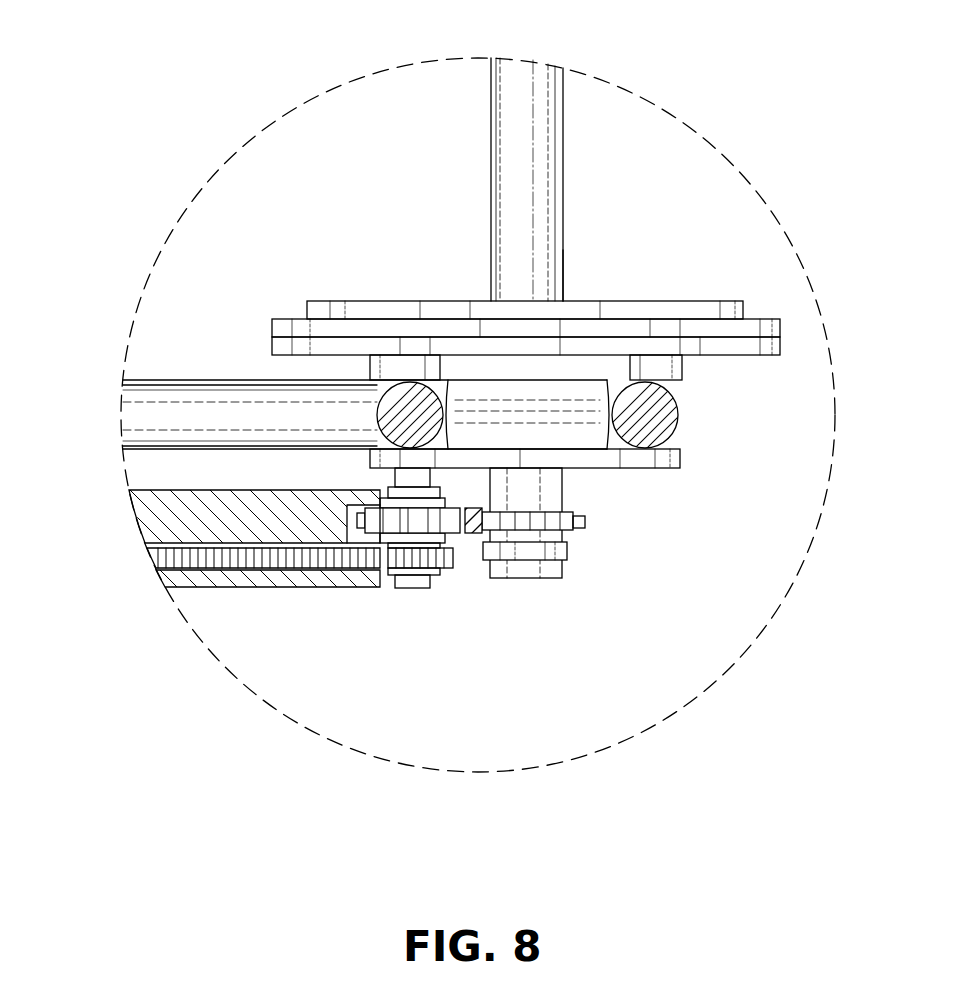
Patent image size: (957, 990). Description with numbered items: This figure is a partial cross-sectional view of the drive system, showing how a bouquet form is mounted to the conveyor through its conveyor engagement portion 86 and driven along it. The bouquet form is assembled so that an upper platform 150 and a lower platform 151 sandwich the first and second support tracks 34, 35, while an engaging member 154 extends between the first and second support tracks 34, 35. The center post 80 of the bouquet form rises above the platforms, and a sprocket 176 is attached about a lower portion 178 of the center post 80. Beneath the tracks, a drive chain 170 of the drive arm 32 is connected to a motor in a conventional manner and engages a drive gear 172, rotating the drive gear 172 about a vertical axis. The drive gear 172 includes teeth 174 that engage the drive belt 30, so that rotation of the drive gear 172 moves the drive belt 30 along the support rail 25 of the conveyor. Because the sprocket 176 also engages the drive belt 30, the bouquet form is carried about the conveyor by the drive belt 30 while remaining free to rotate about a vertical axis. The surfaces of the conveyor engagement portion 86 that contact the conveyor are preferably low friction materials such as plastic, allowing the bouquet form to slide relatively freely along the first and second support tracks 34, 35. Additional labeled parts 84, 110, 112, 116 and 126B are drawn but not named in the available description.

The support rail 25 is at (196, 400).
The drive belt 30 is at (477, 533).
The drive arm 32 is at (198, 466).
The first support track 34 is at (383, 397).
The second support track 35 is at (660, 413).
The center post 80 is at (507, 198).
The plate assembly 84 is at (758, 308).
The conveyor engagement portion 86 is at (683, 488).
The lower plate 110 is at (272, 347).
The upper plate 112 is at (272, 324).
The top plate 116 is at (302, 301).
The shaft section 126B is at (576, 275).
The upper platform 150 is at (682, 365).
The lower platform 151 is at (681, 460).
The engaging member 154 is at (573, 440).
The drive chain 170 is at (315, 557).
The drive gear 172 is at (413, 575).
The teeth 174 is at (457, 533).
The sprocket 176 is at (585, 522).
The lower portion 178 is at (527, 578).